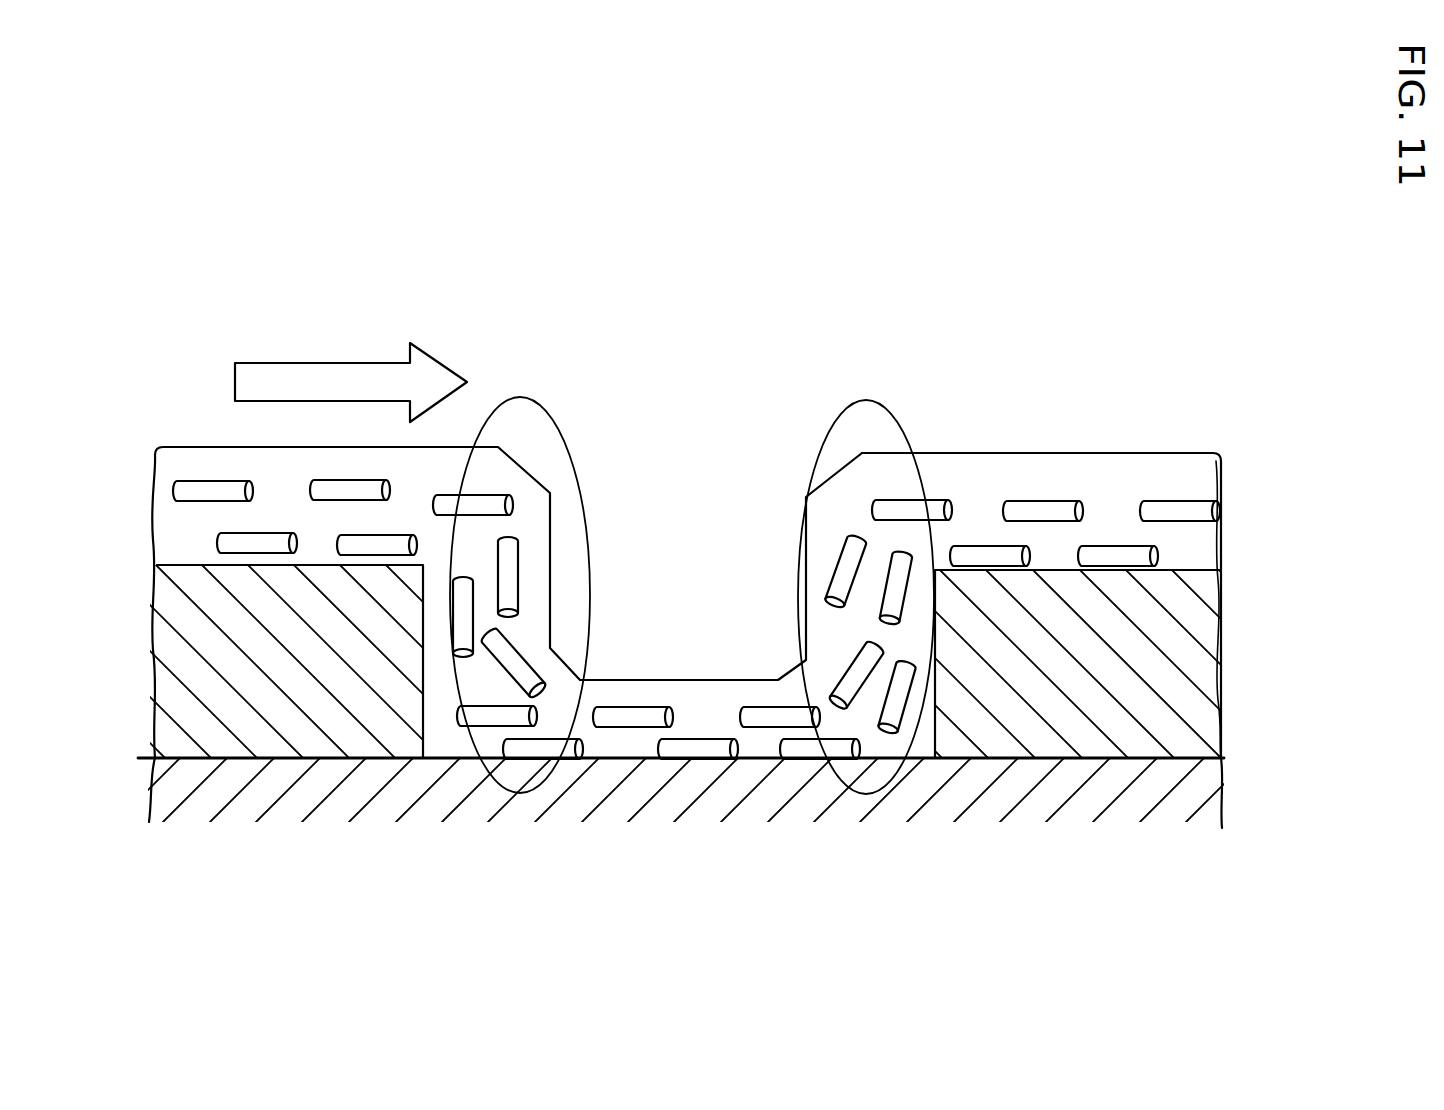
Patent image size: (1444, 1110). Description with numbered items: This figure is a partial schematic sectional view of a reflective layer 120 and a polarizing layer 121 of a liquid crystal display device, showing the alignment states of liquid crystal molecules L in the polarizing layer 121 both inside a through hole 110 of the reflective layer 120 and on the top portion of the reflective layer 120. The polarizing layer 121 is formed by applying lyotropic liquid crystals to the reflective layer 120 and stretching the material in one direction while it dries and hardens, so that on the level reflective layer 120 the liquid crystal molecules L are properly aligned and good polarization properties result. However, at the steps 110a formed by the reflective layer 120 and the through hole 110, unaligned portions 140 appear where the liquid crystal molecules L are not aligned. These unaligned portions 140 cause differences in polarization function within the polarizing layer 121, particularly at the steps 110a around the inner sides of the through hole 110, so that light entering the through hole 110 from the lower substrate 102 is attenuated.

The lower substrate 102 is at (1190, 795).
The through hole 110 is at (757, 494).
The steps 110a is at (425, 583).
The reflective layer 120 is at (1183, 655).
The polarizing layer 121 is at (1103, 490).
The unaligned portions 140 is at (542, 408).
The liquid crystal molecules L is at (1190, 500).